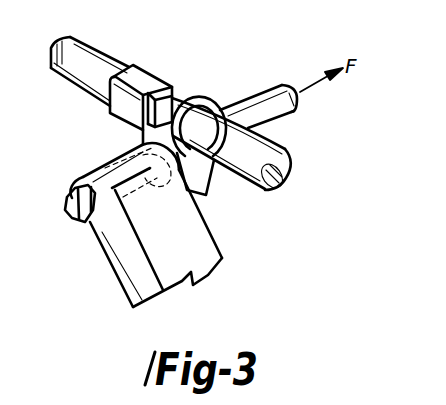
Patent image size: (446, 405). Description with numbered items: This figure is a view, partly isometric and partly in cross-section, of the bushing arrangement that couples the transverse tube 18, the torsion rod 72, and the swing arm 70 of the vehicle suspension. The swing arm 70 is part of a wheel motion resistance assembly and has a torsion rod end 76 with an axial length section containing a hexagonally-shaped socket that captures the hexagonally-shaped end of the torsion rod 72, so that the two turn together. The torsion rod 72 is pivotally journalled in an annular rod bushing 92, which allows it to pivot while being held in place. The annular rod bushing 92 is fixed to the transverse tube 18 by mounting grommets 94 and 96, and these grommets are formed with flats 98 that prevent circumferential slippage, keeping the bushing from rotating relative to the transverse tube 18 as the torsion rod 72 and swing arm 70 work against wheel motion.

The transverse tube 18 is at (90, 55).
The swing arm 70 is at (155, 225).
The torsion rod 72 is at (70, 210).
The torsion rod end 76 is at (122, 247).
The annular rod bushing 92 is at (203, 190).
The mounting grommet 94 is at (227, 110).
The mounting grommet 96 is at (134, 64).
The flats 98 is at (162, 95).